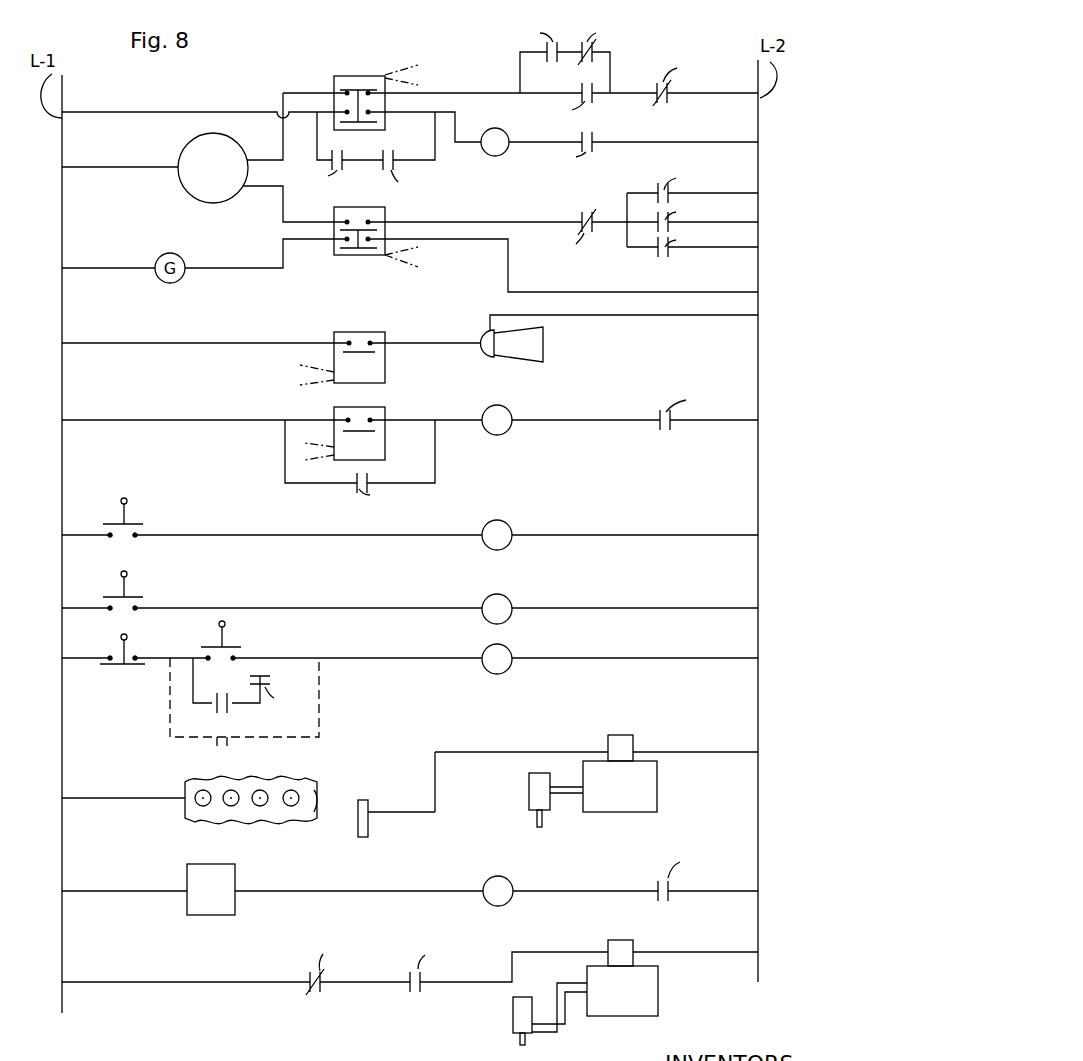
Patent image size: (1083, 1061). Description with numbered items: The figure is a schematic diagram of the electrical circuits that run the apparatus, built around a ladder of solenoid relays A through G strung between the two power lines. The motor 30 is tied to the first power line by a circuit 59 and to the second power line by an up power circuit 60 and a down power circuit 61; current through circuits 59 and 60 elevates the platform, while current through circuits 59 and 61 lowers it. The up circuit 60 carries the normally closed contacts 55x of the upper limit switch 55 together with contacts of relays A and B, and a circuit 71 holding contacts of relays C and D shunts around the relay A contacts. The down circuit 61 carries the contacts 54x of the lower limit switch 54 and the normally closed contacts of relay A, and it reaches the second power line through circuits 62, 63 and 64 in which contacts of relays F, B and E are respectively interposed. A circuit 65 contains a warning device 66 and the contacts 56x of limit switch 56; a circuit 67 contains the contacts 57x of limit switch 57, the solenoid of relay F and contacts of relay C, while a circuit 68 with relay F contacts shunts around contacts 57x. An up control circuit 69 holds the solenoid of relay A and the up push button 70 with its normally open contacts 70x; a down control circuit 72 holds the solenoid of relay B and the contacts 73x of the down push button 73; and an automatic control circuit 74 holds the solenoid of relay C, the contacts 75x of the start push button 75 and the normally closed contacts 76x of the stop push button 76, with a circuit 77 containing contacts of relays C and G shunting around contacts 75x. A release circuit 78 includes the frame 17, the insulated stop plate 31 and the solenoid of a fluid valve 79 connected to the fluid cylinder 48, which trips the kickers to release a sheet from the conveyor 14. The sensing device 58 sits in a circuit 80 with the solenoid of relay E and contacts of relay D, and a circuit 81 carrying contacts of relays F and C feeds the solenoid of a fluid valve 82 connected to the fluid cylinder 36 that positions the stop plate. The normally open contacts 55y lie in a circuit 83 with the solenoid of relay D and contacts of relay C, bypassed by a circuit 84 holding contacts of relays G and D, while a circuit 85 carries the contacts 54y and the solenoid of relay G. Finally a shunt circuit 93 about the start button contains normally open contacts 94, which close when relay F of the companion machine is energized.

The conveyor 14 is at (188, 806).
The frame 17 is at (315, 817).
The motor 30 is at (195, 184).
The insulated stop plate 31 is at (361, 802).
The fluid cylinder 36 is at (518, 1011).
The fluid cylinder 48 is at (530, 790).
The lower limit switch 54 is at (358, 257).
The normally closed contacts 54x is at (360, 214).
The normally closed contacts 54y is at (333, 247).
The upper limit switch 55 is at (335, 80).
The normally closed contacts 55x is at (358, 86).
The normally open contacts 55y is at (365, 126).
The limit switch 56 is at (386, 372).
The normally open contacts 56x is at (361, 335).
The limit switch 57 is at (386, 455).
The normally open contacts 57x is at (361, 414).
The sensing device 58 is at (205, 898).
The circuit 59 is at (107, 153).
The up power circuit 60 is at (468, 93).
The down power circuit 61 is at (530, 222).
The circuit 62 is at (740, 193).
The circuit 63 is at (740, 222).
The circuit 64 is at (740, 247).
The circuit 65 is at (167, 344).
The warning device 66 is at (534, 346).
The circuit 67 is at (185, 420).
The circuit 68 is at (435, 456).
The up control circuit 69 is at (580, 535).
The up push button 70 is at (128, 515).
The normally open contacts 70x is at (127, 538).
The circuit 71 is at (611, 70).
The down control circuit 72 is at (580, 608).
The down push button 73 is at (130, 596).
The normally open contacts 73x is at (124, 611).
The automatic control circuit 74 is at (580, 658).
The start push button 75 is at (228, 635).
The normally open contacts 75x is at (247, 657).
The stop push button 76 is at (118, 642).
The normally closed contacts 76x is at (127, 667).
The circuit 77 is at (192, 690).
The release circuit 78 is at (418, 752).
The solenoid operated fluid valve 79 is at (648, 780).
The circuit 80 is at (558, 891).
The circuit 81 is at (527, 952).
The solenoid operated fluid valve 82 is at (660, 983).
The circuit 83 is at (670, 142).
The circuit 84 is at (437, 151).
The circuit 85 is at (590, 292).
The shunt circuit 93 is at (320, 719).
The normally open contacts 94 is at (217, 746).